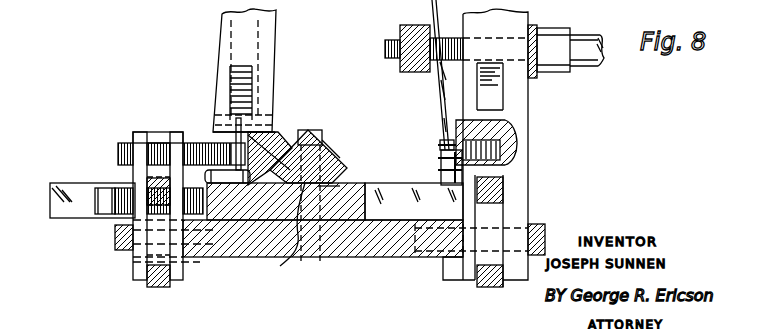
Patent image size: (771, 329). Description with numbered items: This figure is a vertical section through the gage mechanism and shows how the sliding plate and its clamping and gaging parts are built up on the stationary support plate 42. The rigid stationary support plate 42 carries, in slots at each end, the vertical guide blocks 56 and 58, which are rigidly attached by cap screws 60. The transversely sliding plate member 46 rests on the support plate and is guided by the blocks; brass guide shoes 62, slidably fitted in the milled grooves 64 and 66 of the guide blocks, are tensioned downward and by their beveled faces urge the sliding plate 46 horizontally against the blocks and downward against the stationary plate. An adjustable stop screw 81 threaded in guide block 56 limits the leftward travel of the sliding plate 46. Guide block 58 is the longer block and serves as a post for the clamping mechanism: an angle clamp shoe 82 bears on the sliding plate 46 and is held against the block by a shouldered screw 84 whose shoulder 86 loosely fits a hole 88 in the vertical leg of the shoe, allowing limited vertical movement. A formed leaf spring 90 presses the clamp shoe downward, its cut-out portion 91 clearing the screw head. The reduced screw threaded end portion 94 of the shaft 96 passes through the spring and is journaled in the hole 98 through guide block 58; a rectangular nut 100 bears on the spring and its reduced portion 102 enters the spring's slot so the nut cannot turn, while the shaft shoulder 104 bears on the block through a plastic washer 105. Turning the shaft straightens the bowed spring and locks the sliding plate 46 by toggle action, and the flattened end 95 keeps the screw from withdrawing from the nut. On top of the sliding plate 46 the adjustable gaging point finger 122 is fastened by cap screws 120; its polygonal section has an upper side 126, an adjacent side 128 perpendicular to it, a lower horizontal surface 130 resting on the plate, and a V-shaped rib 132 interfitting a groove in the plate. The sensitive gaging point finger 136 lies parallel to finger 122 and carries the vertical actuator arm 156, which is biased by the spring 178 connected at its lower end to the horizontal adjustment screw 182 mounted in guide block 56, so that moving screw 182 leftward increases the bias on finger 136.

The stationary support plate 42 is at (317, 257).
The sliding plate member 46 is at (403, 166).
The guide block 56 is at (146, 133).
The guide block 58 is at (528, 122).
The cap screw 60 is at (114, 243).
The brass guide shoe 62 is at (163, 288).
The milled groove 64 is at (162, 135).
The milled groove 66 is at (500, 90).
The adjustable stop screw 81 is at (118, 187).
The angle clamp shoe 82 is at (451, 90).
The shouldered screw 84 is at (443, 150).
The shoulder 86 is at (440, 163).
The hole 88 is at (458, 118).
The formed leaf spring 90 is at (433, 14).
The central cut-out portion 91 is at (438, 130).
The reduced screw threaded end portion 94 is at (446, 38).
The flattened end 95 is at (390, 40).
The shaft 96 is at (600, 34).
The hole 98 is at (509, 38).
The rectangular nut 100 is at (402, 78).
The rectangular reduced portion 102 is at (456, 71).
The shoulder 104 is at (540, 50).
The plastic washer 105 is at (555, 12).
The cap screw 120 is at (303, 132).
The gaging point finger 122 is at (322, 136).
The upper side 126 is at (292, 145).
The adjacent side 128 is at (340, 152).
The lower horizontal surface 130 is at (345, 180).
The V-shaped rib 132 is at (280, 231).
The sensitive gaging point finger 136 is at (217, 138).
The actuator arm 156 is at (283, 22).
The spring 178 is at (238, 130).
The horizontal adjustment screw 182 is at (204, 142).